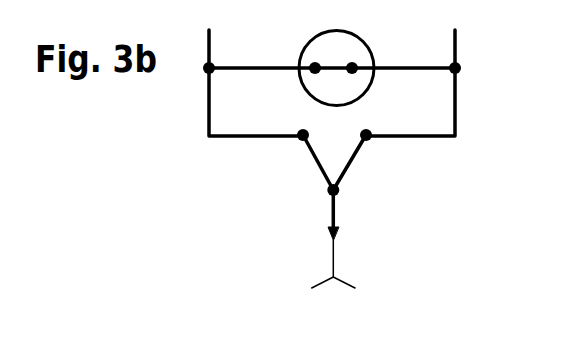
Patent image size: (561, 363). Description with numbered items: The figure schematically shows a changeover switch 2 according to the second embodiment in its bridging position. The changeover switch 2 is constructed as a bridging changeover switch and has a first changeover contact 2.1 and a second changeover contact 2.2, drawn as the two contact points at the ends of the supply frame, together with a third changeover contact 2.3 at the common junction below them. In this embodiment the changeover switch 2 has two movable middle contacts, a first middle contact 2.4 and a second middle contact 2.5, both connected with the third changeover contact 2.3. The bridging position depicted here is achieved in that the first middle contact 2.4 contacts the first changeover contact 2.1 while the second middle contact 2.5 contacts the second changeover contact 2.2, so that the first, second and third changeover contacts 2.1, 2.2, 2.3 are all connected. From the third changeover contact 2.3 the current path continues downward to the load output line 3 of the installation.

The changeover switch 2 is at (323, 159).
The first changeover contact 2.1 is at (300, 140).
The second changeover contact 2.2 is at (369, 137).
The third changeover contact 2.3 is at (337, 189).
The first middle contact 2.4 is at (268, 202).
The second middle contact 2.5 is at (356, 152).
The load output line 3 is at (335, 215).